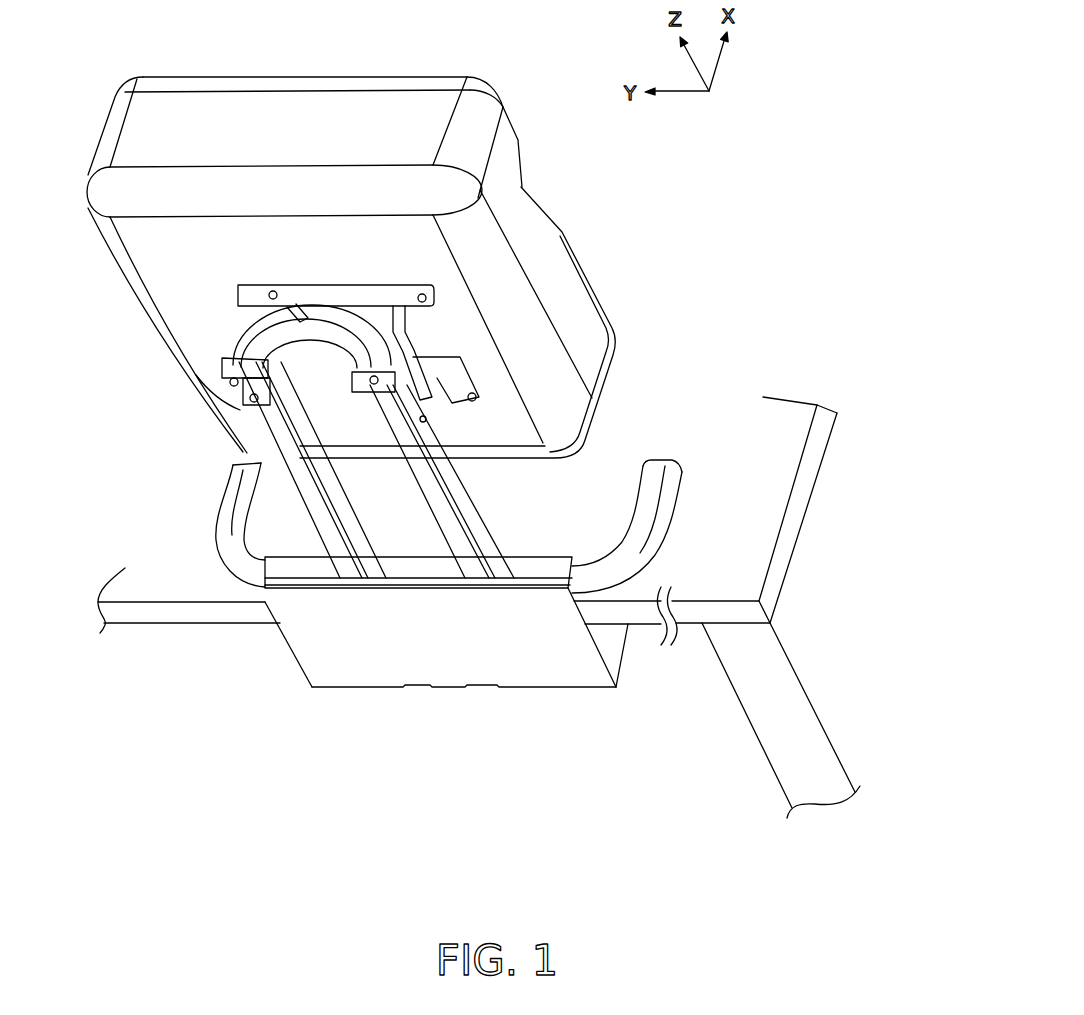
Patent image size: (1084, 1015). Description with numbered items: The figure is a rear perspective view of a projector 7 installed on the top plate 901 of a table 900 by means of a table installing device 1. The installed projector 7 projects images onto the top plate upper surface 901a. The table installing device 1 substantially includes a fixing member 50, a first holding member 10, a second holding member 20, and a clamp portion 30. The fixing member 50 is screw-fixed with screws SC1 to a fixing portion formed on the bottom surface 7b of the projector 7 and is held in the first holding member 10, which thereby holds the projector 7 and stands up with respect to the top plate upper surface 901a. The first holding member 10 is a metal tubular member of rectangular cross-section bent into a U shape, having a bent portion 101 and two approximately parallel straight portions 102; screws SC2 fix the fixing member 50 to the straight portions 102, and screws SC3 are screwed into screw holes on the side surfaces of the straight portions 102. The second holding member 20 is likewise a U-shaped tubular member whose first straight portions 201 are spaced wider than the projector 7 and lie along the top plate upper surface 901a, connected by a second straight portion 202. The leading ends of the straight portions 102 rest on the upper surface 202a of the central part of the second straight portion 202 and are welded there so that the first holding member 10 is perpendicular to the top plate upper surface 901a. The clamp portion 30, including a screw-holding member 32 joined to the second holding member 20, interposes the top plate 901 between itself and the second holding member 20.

The table installing device 1 is at (421, 504).
The projector 7 is at (364, 77).
The bottom surface 7b is at (438, 256).
The first holding member 10 is at (375, 405).
The bent portion 101 is at (333, 312).
The straight portions 102 is at (347, 521).
The second holding member 20 is at (451, 599).
The first straight portions 201 is at (228, 527).
The second straight portion 202 is at (418, 648).
The upper surface 202a is at (413, 573).
The clamp portion 30 is at (434, 671).
The screw-holding member 32 is at (330, 677).
The fixing member 50 is at (466, 347).
The table 900 is at (814, 563).
The top plate 901 is at (773, 465).
The top plate upper surface 901a is at (760, 404).
The screw SC1 is at (277, 290).
The screw SC2 is at (248, 404).
The screw SC3 is at (428, 416).